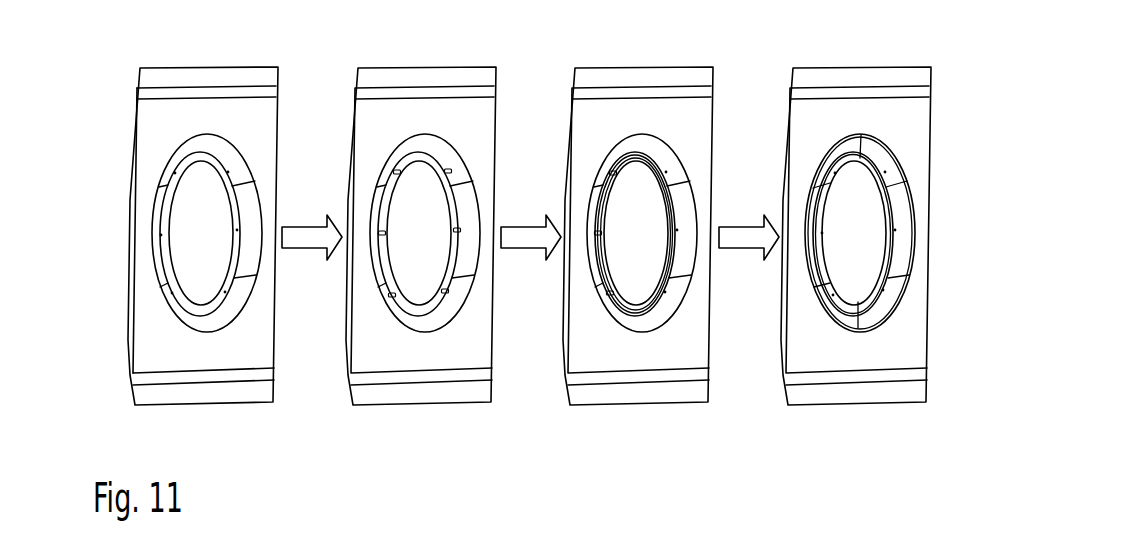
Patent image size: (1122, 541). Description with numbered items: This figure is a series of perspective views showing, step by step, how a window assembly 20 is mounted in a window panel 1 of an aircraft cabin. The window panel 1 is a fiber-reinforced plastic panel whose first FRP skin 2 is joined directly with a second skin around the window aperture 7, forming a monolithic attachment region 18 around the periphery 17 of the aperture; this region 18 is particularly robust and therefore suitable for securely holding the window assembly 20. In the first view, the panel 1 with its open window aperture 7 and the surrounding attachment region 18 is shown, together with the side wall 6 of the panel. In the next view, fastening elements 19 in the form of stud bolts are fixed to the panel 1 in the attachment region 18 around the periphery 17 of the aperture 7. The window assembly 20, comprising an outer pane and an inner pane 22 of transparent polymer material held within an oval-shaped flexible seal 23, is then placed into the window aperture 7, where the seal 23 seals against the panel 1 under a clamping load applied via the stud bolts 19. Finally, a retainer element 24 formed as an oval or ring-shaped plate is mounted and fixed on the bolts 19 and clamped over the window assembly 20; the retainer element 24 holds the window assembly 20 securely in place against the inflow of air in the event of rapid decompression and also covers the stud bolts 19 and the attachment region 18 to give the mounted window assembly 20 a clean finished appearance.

The window panel 1 is at (121, 58).
The first FRP skin 2 is at (118, 354).
The front wall 6 is at (132, 210).
The window aperture 7 is at (205, 268).
The periphery 17 is at (207, 163).
The attachment region 18 is at (447, 268).
The fastening elements 19 is at (381, 233).
The window assembly 20 is at (868, 226).
The inner pane 22 is at (647, 225).
The flexible seal 23 is at (611, 169).
The retainer element 24 is at (833, 307).